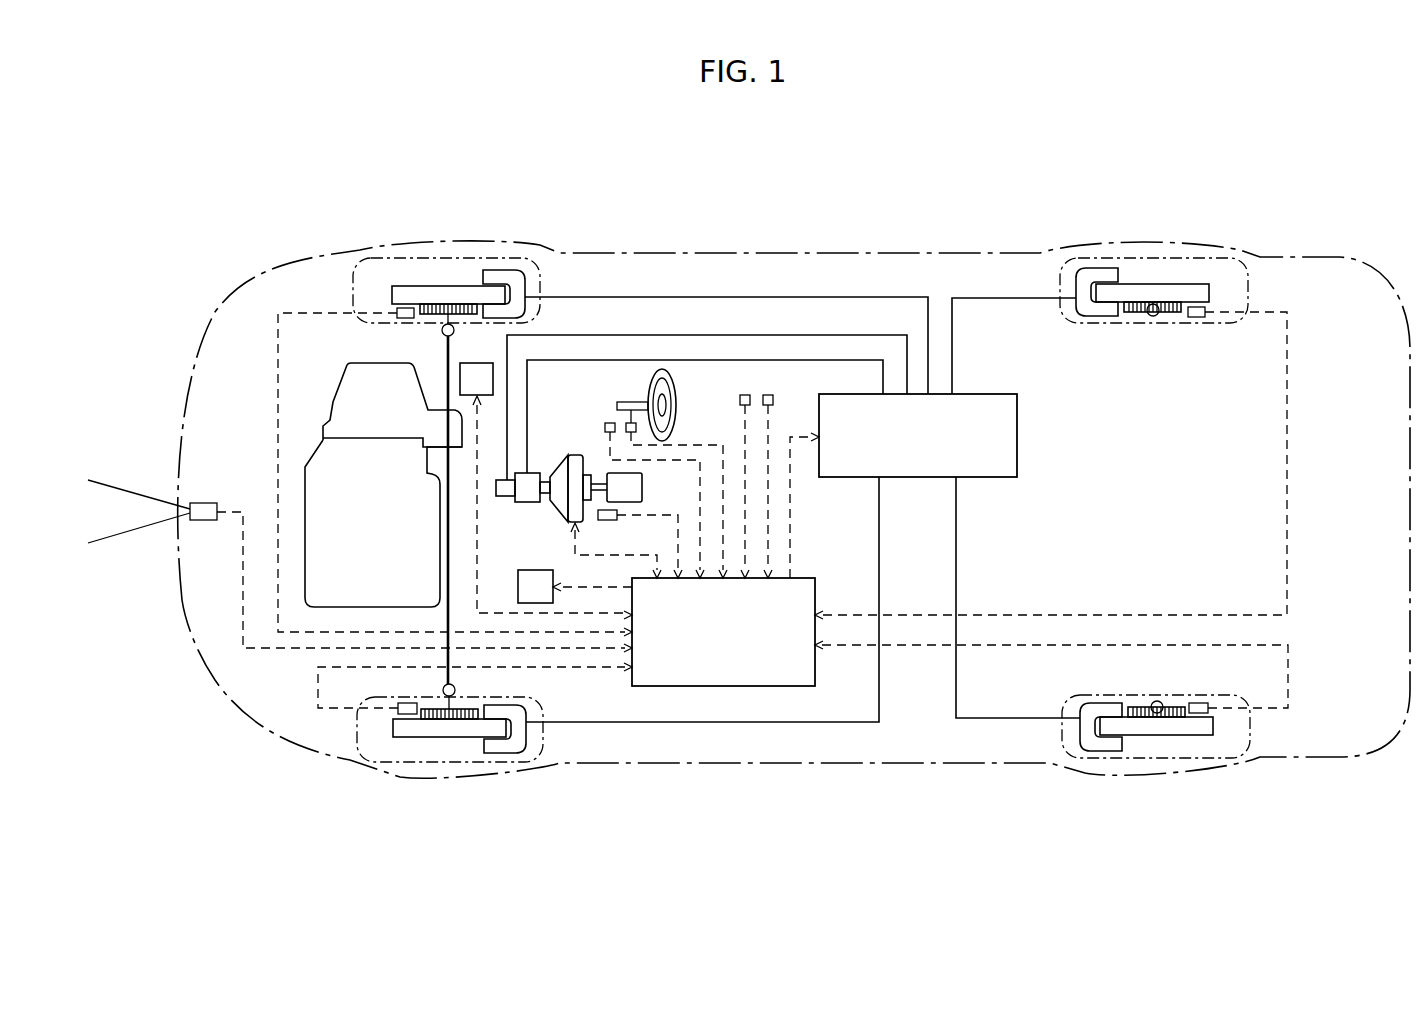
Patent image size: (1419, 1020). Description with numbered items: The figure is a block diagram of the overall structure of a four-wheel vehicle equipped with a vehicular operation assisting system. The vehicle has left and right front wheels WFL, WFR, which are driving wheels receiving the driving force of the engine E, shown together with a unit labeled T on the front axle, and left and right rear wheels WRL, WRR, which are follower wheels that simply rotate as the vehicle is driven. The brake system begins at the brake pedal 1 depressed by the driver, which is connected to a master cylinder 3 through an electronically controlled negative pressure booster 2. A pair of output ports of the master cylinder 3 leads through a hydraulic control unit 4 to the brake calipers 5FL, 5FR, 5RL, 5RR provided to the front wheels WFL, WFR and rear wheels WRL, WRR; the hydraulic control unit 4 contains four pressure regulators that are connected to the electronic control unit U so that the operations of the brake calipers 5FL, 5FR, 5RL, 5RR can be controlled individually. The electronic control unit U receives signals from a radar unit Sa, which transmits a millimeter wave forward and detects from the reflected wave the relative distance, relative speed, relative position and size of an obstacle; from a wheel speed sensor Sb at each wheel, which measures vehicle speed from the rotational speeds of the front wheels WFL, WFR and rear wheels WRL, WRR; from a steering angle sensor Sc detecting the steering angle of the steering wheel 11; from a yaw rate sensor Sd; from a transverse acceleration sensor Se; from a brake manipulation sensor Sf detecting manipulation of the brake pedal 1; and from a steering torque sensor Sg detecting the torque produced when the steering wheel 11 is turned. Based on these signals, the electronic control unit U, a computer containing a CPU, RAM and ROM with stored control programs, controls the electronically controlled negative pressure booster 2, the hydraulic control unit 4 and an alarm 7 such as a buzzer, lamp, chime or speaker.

The brake pedal 1 is at (630, 488).
The electronically controlled negative pressure booster 2 is at (560, 495).
The master cylinder 3 is at (506, 492).
The hydraulic control unit 4 is at (927, 452).
The alarm 7 is at (544, 601).
The steering wheel 11 is at (676, 412).
The electronic control unit U is at (733, 646).
The engine E is at (377, 545).
The transmission T is at (389, 414).
The radar unit Sa is at (206, 503).
The wheel speed sensor Sb is at (405, 318).
The steering angle sensor Sc is at (605, 428).
The yaw rate sensor Sd is at (740, 395).
The transverse acceleration sensor Se is at (771, 395).
The brake manipulation sensor Sf is at (606, 520).
The steering torque sensor Sg is at (625, 402).
The right front wheel WFR is at (427, 258).
The left front wheel WFL is at (430, 762).
The right rear wheel WRR is at (1175, 258).
The left rear wheel WRL is at (1178, 758).
The brake caliper 5FR is at (527, 268).
The brake caliper 5FL is at (531, 755).
The brake caliper 5RR is at (1073, 268).
The brake caliper 5RL is at (1075, 752).